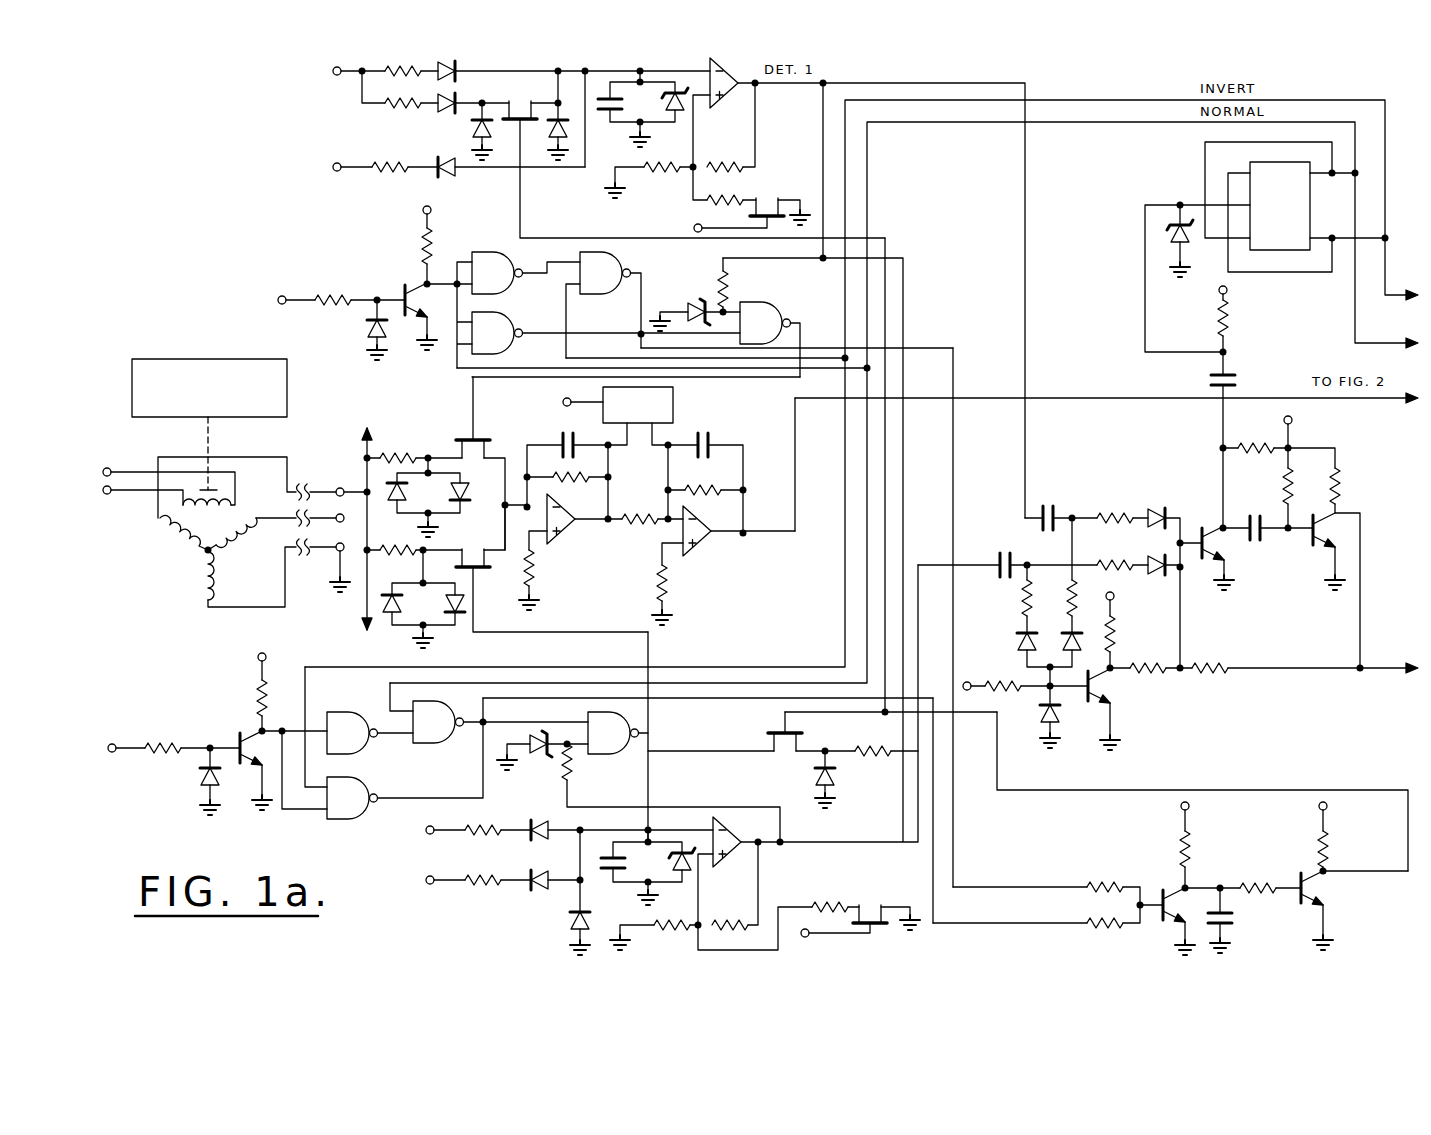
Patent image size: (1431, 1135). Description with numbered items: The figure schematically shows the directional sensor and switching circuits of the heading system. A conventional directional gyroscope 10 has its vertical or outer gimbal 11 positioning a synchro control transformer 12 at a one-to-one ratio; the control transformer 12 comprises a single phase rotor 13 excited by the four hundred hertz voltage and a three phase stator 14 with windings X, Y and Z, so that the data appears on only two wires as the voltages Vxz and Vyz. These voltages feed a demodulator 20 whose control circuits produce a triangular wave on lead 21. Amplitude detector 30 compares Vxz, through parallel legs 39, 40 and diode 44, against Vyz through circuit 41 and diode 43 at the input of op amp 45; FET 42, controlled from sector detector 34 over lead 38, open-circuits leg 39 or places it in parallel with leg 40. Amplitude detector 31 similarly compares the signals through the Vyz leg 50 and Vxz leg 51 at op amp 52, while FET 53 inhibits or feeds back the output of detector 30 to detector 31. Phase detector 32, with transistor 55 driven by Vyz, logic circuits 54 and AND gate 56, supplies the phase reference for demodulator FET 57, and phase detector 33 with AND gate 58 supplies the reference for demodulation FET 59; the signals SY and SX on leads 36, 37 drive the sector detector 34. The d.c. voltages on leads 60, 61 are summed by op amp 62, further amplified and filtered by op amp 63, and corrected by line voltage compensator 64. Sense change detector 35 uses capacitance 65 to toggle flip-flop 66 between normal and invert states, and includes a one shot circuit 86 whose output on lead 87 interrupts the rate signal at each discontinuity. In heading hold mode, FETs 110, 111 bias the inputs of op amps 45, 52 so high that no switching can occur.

The directional gyroscope 10 is at (203, 358).
The vertical or outer gimbal 11 is at (213, 436).
The synchro control transformer 12 is at (244, 542).
The single phase rotor 13 is at (236, 494).
The three phase stator 14 is at (239, 558).
The demodulator 20 is at (622, 602).
The output lead 21 is at (1087, 397).
The amplitude detector 30 is at (553, 93).
The amplitude detector 31 is at (628, 910).
The phase detector 32 is at (690, 270).
The phase detector 33 is at (540, 802).
The sector detector 34 is at (1283, 950).
The sense change detector 35 is at (1161, 500).
The lead 36 is at (955, 806).
The lead 37 is at (997, 925).
The lead 38 is at (1262, 790).
The parallel leg 39 is at (362, 104).
The parallel leg 40 is at (428, 76).
The circuit 41 is at (412, 173).
The FET 42 is at (528, 123).
The diode 43 is at (458, 173).
The diode 44 is at (458, 76).
The op amp 45 is at (727, 103).
The Vyz leg 50 is at (440, 834).
The Vxz leg 51 is at (440, 884).
The op amp 52 is at (730, 858).
The FET 53 is at (785, 747).
The logic circuits 54 is at (620, 320).
The transistor 55 is at (396, 286).
The AND logic gate 56 is at (763, 300).
The demodulator FET 57 is at (460, 432).
The AND gate 58 is at (603, 756).
The demodulation FET 59 is at (480, 572).
The lead 60 is at (508, 462).
The lead 61 is at (500, 538).
The op amp 62 is at (575, 530).
The op amp 63 is at (712, 540).
The line voltage compensator 64 is at (673, 405).
The capacitance 65 is at (1048, 509).
The flip-flop 66 is at (1285, 252).
The one shot circuit 86 is at (1292, 593).
The lead 87 is at (1363, 672).
The FET 110 is at (768, 206).
The FET 111 is at (865, 912).